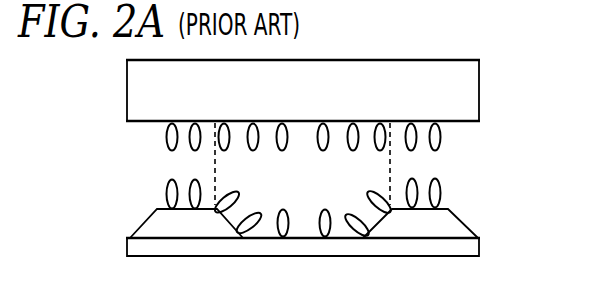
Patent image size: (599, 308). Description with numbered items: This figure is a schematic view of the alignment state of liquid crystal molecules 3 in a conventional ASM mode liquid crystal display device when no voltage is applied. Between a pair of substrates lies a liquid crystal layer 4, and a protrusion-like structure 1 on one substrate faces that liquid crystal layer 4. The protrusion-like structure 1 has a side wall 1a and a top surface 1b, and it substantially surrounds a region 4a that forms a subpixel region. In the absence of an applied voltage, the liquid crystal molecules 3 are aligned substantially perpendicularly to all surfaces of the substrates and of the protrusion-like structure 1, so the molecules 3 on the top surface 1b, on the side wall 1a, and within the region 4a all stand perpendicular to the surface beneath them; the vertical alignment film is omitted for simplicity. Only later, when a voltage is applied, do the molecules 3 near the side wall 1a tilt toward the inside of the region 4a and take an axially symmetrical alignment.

The protrusion-like structure 1 is at (438, 268).
The side wall 1a is at (235, 268).
The top surface 1b is at (493, 207).
The liquid crystal molecules 3 is at (500, 168).
The liquid crystal layer 4 is at (162, 168).
The region 4a is at (303, 158).